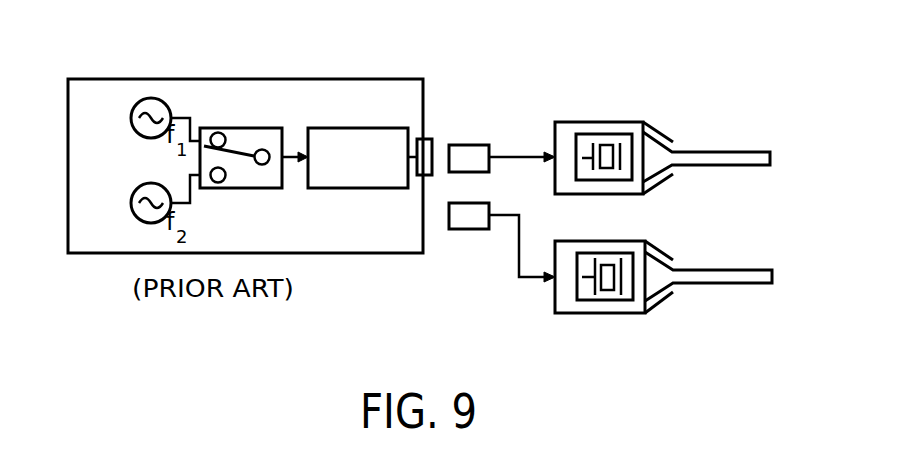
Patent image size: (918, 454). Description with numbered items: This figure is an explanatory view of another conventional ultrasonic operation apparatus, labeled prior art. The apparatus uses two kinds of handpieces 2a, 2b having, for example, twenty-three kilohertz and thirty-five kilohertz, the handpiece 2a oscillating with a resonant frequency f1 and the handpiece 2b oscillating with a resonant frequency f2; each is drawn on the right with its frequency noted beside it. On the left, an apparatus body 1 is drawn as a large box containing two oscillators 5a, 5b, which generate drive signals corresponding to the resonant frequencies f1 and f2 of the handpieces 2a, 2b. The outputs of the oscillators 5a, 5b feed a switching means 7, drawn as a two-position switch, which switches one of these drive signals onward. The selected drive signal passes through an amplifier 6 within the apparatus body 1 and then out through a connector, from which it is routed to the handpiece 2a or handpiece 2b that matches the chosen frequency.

The apparatus body 1 is at (272, 79).
The oscillator 5a is at (131, 118).
The oscillator 5b is at (131, 203).
The switching means 7 is at (268, 128).
The amplifier 6 is at (376, 189).
The handpiece 2a is at (607, 121).
The handpiece 2b is at (636, 314).